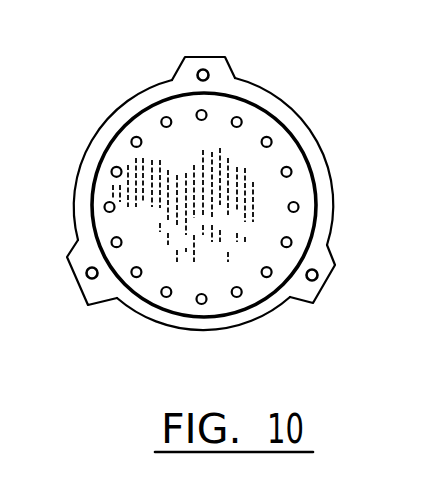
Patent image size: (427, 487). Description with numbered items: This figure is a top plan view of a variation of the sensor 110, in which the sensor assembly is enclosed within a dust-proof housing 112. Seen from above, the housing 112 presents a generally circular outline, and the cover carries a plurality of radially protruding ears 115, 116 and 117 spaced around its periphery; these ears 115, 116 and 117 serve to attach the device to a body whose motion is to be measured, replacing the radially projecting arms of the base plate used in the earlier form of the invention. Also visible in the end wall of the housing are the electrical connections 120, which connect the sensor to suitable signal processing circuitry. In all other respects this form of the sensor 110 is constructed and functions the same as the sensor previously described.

The sensor 110 is at (225, 217).
The dust-proof housing 112 is at (308, 118).
The radially protruding ear 115 is at (88, 306).
The radially protruding ear 116 is at (323, 286).
The radially protruding ear 117 is at (236, 77).
The electrical connections 120 is at (162, 119).